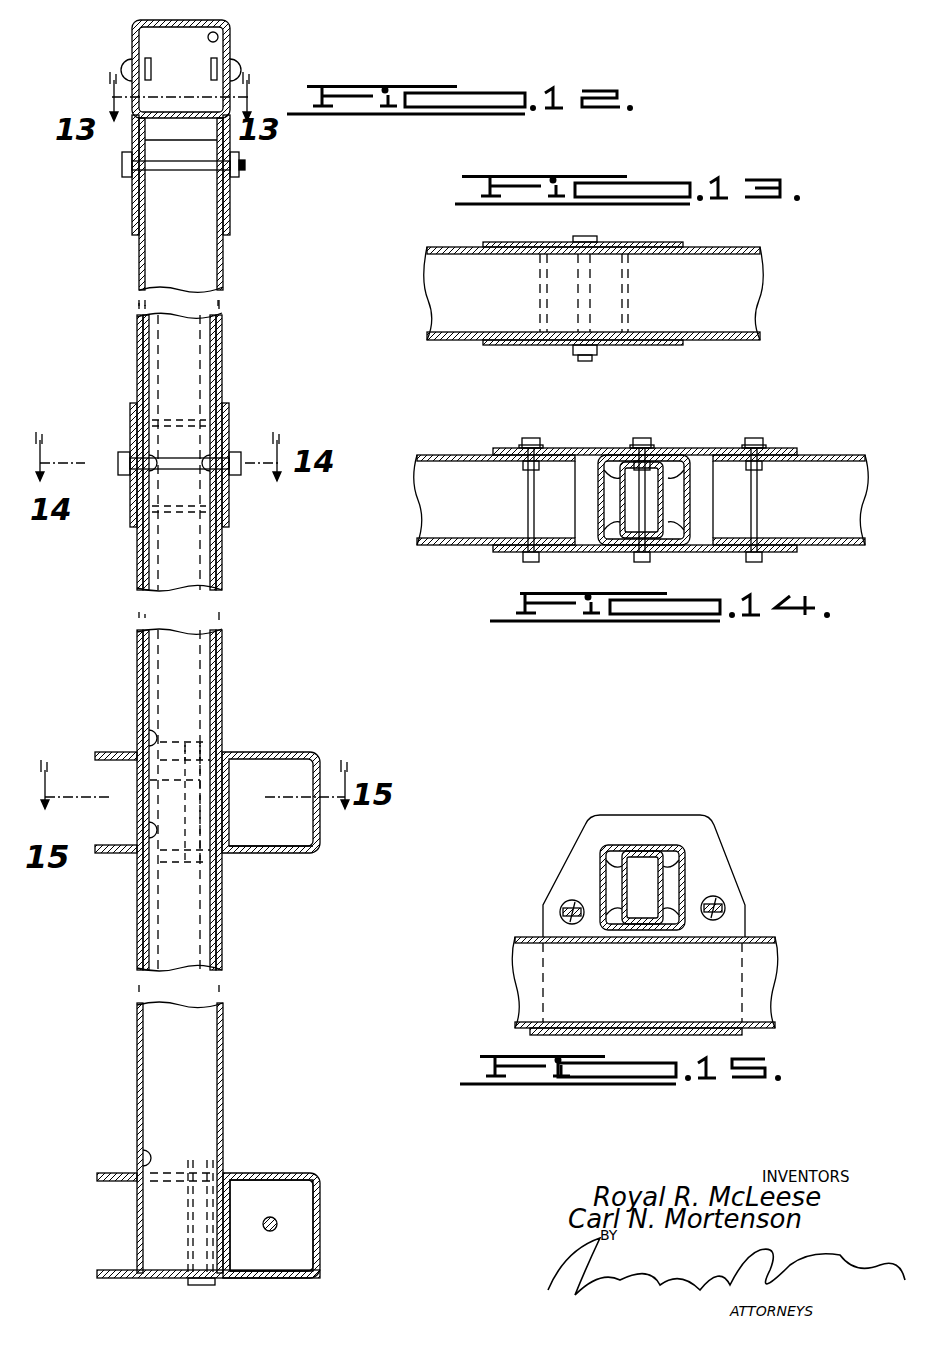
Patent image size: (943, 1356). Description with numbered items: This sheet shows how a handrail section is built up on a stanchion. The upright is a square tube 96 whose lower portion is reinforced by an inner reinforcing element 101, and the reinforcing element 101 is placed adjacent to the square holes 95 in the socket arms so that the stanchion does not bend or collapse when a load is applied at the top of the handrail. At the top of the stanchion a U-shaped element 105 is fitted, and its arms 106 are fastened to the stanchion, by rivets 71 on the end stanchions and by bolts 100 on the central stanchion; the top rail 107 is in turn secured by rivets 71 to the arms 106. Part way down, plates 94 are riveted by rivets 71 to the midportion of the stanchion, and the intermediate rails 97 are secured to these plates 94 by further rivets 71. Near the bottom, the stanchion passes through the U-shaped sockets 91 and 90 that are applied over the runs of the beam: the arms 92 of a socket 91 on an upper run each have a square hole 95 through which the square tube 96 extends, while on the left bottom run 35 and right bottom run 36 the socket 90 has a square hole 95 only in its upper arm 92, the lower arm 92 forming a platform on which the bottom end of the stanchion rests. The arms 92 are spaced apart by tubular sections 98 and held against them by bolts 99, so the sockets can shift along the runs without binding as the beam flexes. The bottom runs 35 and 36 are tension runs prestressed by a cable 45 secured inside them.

In FIG. 12, the left bottom run 35 is at (320, 770).
In FIG. 15, the left bottom run 35 is at (765, 982).
In FIG. 12, the right bottom run 36 is at (318, 1180).
In FIG. 12, the cable 45 is at (277, 1224).
In FIG. 12, the rivets 71 is at (118, 461).
In FIG. 14, the rivets 71 is at (533, 438).
In FIG. 12, the U-shaped socket 90 is at (316, 1210).
In FIG. 12, the U-shaped socket 91 is at (321, 846).
In FIG. 15, the U-shaped socket 91 is at (728, 1036).
In FIG. 12, the arms 92 is at (275, 753).
In FIG. 15, the arms 92 is at (644, 876).
In FIG. 12, the plates 94 is at (135, 505).
In FIG. 14, the plates 94 is at (566, 450).
In FIG. 12, the square hole 95 is at (150, 735).
In FIG. 15, the square hole 95 is at (626, 850).
In FIG. 12, the square tube 96 is at (222, 352).
In FIG. 13, the square tube 96 is at (630, 293).
In FIG. 14, the square tube 96 is at (690, 520).
In FIG. 15, the square tube 96 is at (666, 880).
In FIG. 14, the intermediate rails 97 is at (832, 462).
In FIG. 12, the tubular sections 98 is at (185, 775).
In FIG. 15, the tubular sections 98 is at (560, 917).
In FIG. 12, the bolts 99 is at (215, 712).
In FIG. 15, the bolts 99 is at (562, 907).
In FIG. 12, the bolts 100 is at (186, 172).
In FIG. 13, the bolts 100 is at (576, 242).
In FIG. 12, the inner reinforcing element 101 is at (190, 388).
In FIG. 14, the inner reinforcing element 101 is at (673, 470).
In FIG. 15, the inner reinforcing element 101 is at (656, 860).
In FIG. 12, the U-shaped elements 105 is at (126, 147).
In FIG. 13, the U-shaped elements 105 is at (542, 343).
In FIG. 12, the arms 106 is at (232, 160).
In FIG. 13, the arms 106 is at (631, 242).
In FIG. 12, the top rail 107 is at (214, 27).
In FIG. 13, the top rail 107 is at (461, 247).